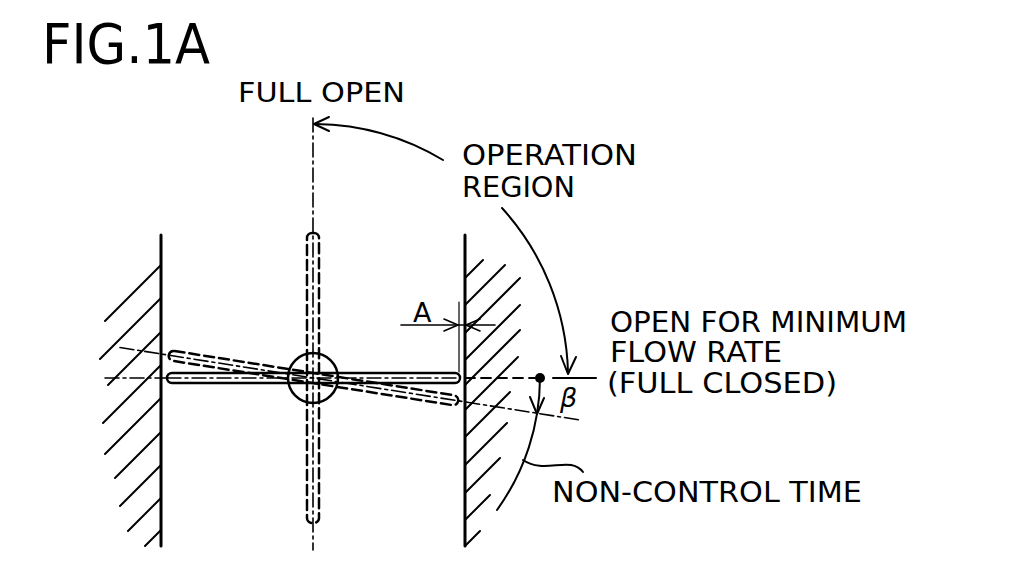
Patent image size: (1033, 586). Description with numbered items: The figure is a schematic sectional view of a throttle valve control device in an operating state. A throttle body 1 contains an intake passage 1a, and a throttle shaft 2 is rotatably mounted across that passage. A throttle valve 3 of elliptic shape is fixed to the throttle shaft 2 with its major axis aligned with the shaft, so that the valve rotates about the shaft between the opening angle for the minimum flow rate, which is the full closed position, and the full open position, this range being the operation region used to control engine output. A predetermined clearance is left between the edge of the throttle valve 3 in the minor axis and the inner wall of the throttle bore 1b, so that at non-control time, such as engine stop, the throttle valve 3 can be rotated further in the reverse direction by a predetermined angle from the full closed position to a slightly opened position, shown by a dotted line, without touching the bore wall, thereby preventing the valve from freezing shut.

The throttle body 1 is at (177, 207).
The intake passage 1a is at (251, 297).
The throttle bore 1b is at (463, 458).
The throttle shaft 2 is at (295, 400).
The throttle valve 3 is at (377, 373).